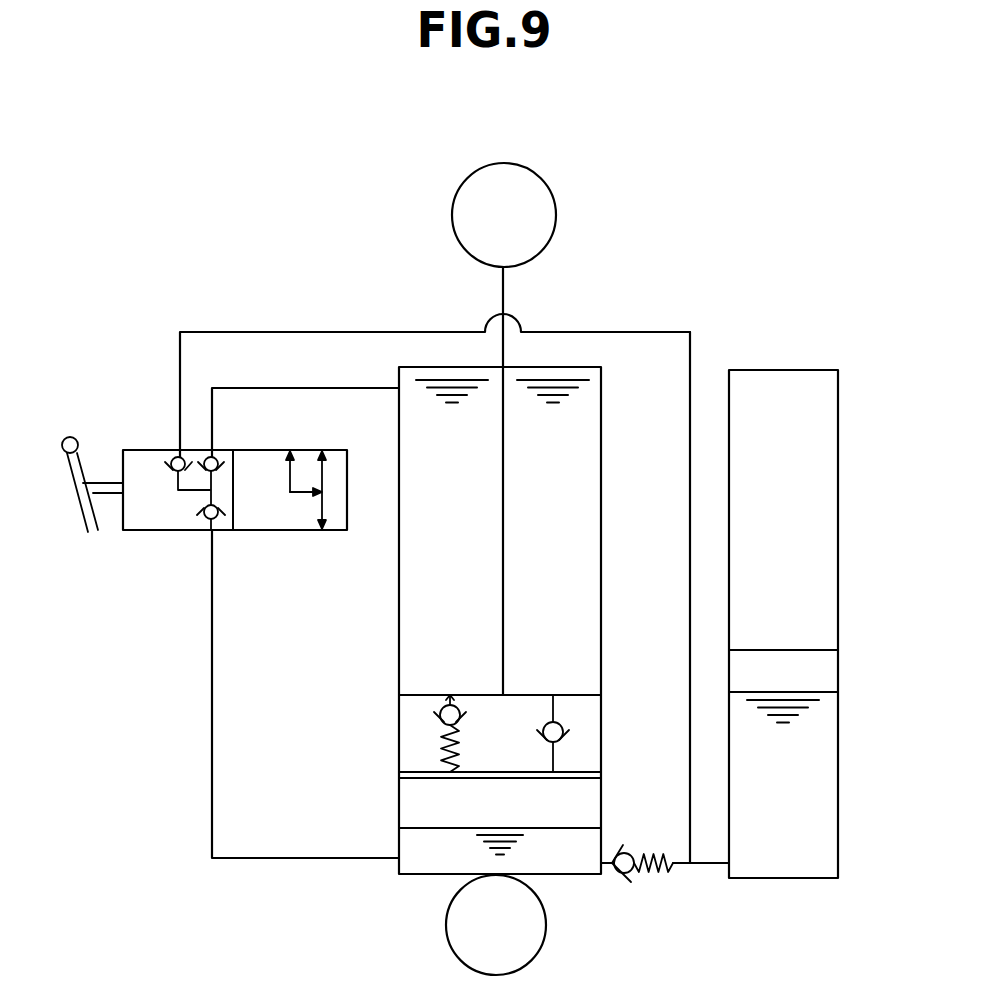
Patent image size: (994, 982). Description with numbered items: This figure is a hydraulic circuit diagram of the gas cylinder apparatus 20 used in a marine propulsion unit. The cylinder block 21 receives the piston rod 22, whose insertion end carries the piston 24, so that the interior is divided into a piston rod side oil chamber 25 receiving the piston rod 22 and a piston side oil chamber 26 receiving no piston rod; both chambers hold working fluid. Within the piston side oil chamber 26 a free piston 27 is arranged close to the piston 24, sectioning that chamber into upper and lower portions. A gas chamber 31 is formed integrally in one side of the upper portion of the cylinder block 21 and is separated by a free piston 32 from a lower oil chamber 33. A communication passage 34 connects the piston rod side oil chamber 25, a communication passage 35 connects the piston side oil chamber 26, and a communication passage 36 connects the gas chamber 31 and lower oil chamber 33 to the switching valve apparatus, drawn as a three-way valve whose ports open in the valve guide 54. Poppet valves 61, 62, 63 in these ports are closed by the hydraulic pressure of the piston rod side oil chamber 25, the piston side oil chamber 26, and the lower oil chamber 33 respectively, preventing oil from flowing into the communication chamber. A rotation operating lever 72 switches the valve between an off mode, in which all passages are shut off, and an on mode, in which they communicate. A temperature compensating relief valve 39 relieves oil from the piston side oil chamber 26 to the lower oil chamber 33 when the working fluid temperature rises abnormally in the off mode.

The gas cylinder apparatus 20 is at (667, 286).
The cylinder block 21 is at (398, 600).
The piston rod 22 is at (503, 294).
The piston 24 is at (417, 738).
The piston rod side oil chamber 25 is at (417, 654).
The piston side oil chamber 26 is at (415, 847).
The free piston 27 is at (417, 803).
The gas chamber 31 is at (820, 533).
The free piston 32 is at (820, 672).
The lower oil chamber 33 is at (818, 774).
The communication passage 34 is at (351, 388).
The communication passage 35 is at (208, 841).
The communication passage 36 is at (321, 332).
The temperature compensating relief valve 39 is at (627, 873).
The valve guide 54 is at (145, 530).
The poppet valve 61 is at (219, 466).
The poppet valve 62 is at (219, 511).
The poppet valve 63 is at (188, 459).
The rotation operating lever 72 is at (67, 437).